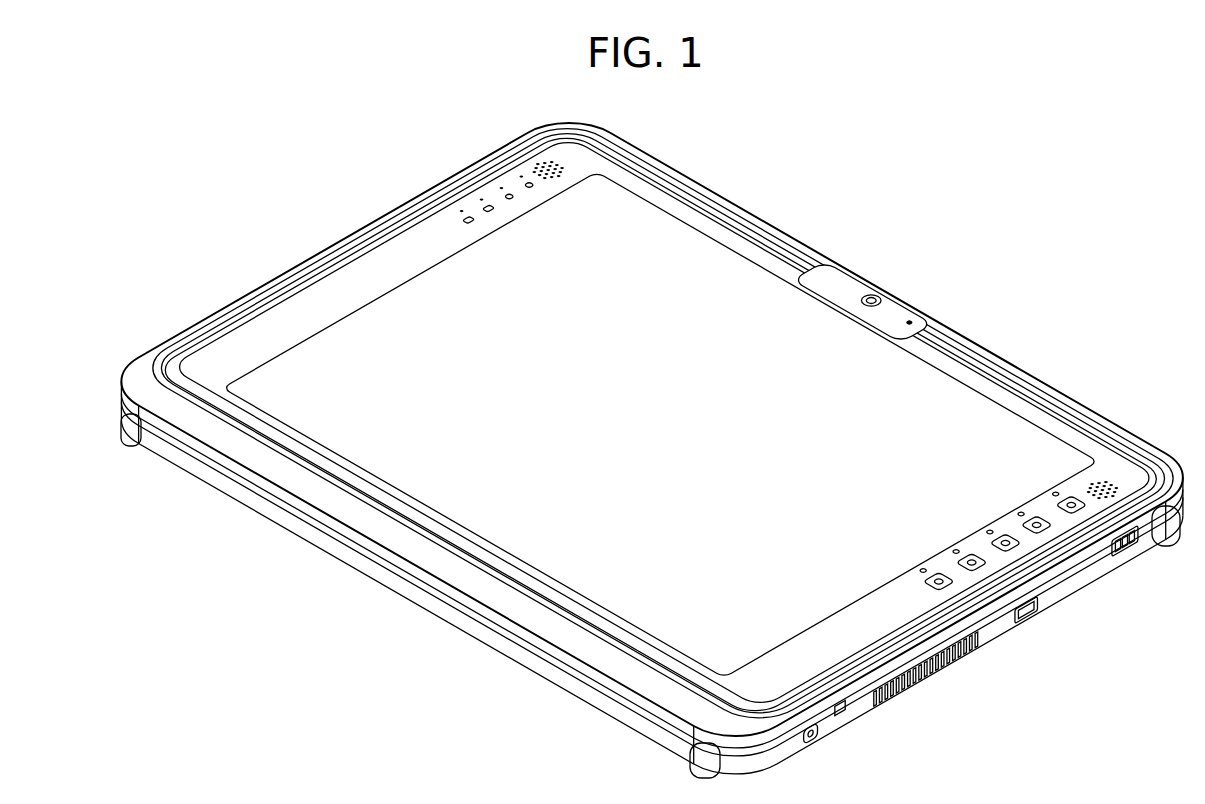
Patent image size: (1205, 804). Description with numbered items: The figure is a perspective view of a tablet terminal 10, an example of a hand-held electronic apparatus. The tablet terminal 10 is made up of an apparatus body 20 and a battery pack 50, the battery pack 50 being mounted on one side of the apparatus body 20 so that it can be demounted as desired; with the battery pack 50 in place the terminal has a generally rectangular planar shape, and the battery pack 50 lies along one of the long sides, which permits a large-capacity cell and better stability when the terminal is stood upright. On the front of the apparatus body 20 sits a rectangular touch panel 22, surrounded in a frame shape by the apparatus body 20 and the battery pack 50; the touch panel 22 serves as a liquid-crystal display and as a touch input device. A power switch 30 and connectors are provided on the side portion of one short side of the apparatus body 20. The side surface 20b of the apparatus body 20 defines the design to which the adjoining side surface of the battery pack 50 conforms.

The tablet terminal 10 is at (411, 131).
The apparatus body 20 is at (778, 198).
The side surface of the apparatus body 20b is at (996, 609).
The touch panel 22 is at (917, 385).
The power switch 30 is at (1112, 561).
The battery pack 50 is at (424, 659).